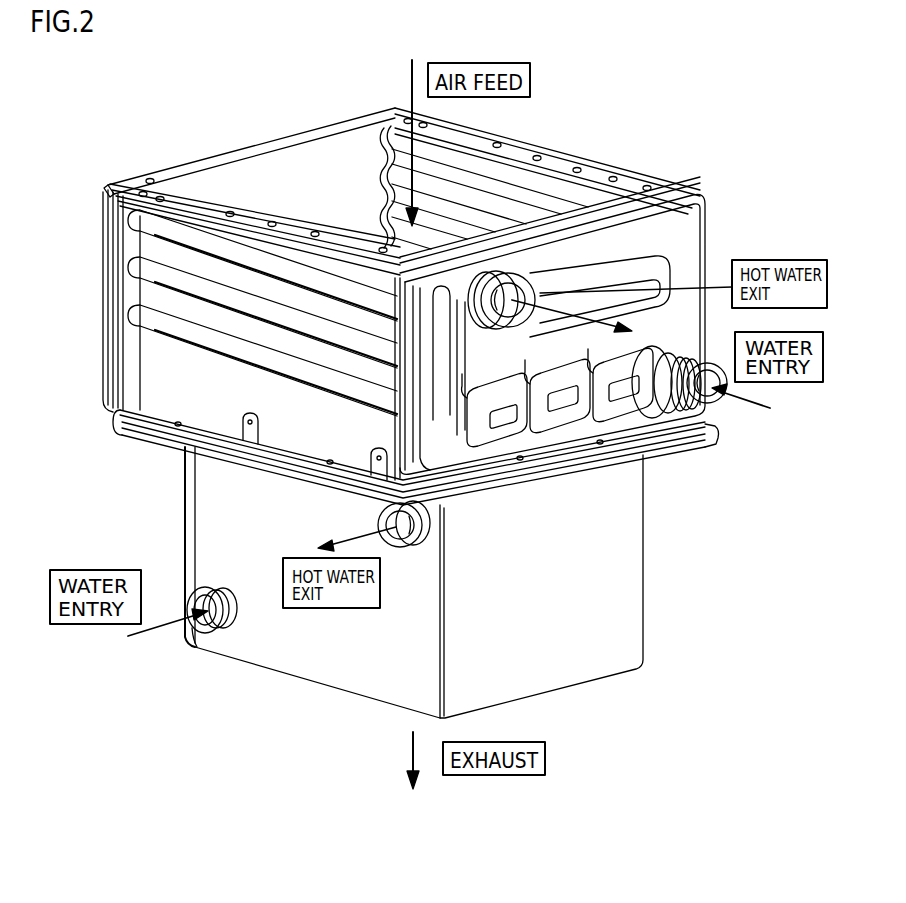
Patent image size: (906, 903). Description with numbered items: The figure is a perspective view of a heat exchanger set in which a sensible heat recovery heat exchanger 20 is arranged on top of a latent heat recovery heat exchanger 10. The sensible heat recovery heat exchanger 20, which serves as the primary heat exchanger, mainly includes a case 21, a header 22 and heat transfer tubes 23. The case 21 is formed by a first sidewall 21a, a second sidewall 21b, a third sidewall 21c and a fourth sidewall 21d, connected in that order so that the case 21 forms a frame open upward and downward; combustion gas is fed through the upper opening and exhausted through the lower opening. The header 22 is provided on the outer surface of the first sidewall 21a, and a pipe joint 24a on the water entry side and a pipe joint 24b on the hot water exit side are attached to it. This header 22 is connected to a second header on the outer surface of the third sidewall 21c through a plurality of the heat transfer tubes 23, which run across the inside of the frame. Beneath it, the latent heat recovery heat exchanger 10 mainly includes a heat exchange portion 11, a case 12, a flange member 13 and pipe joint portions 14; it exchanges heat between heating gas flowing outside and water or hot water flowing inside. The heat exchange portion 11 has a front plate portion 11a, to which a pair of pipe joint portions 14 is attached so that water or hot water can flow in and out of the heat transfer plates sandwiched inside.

The latent heat recovery heat exchanger 10 is at (409, 599).
The heat exchange portion 11 is at (224, 492).
The front plate portion 11a is at (220, 518).
The case 12 is at (626, 581).
The flange member 13 is at (128, 420).
The pipe joint portion 14 is at (204, 633).
The sensible heat recovery heat exchanger 20 is at (323, 298).
The case 21 is at (373, 284).
The first sidewall 21a is at (452, 270).
The second sidewall 21b is at (150, 363).
The third sidewall 21c is at (254, 166).
The fourth sidewall 21d is at (562, 217).
The header 22 is at (581, 334).
The heat transfer tube 23 is at (162, 228).
The pipe joint on the water entry side 24a is at (710, 402).
The pipe joint on the hot water exit side 24b is at (690, 250).